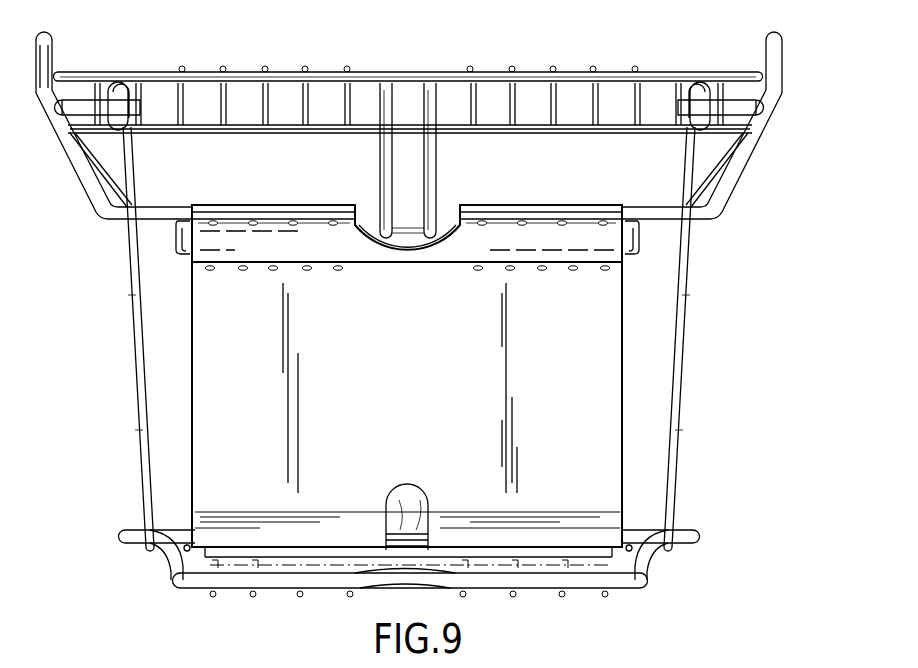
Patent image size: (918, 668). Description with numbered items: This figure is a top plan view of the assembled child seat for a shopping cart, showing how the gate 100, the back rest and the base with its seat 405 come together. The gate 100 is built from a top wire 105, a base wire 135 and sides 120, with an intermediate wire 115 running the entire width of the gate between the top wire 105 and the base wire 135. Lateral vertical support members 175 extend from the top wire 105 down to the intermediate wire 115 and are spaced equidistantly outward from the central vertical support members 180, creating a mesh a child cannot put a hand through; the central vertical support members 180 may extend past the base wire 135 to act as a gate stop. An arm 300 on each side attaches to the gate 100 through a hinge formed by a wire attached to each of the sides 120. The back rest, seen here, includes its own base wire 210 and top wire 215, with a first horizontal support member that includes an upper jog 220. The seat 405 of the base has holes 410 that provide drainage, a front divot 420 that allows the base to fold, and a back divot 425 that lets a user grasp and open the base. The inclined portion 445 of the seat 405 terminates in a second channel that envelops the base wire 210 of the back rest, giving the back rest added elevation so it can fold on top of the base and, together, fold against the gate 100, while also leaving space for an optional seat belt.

The gate 100 is at (601, 50).
The top wire 105 is at (330, 75).
The intermediate wire 115 is at (293, 133).
The sides 120 is at (736, 175).
The base wire 135 is at (160, 217).
The lateral vertical support members 175 is at (554, 103).
The central vertical support members 180 is at (428, 172).
The base wire 210 is at (400, 537).
The top wire 215 is at (613, 588).
The upper jog 220 is at (650, 556).
The arm 300 is at (129, 453).
The seat 405 is at (596, 370).
The holes 410 is at (604, 271).
The front divot 420 is at (368, 228).
The back divot 425 is at (420, 500).
The inclined portion 445 is at (605, 530).